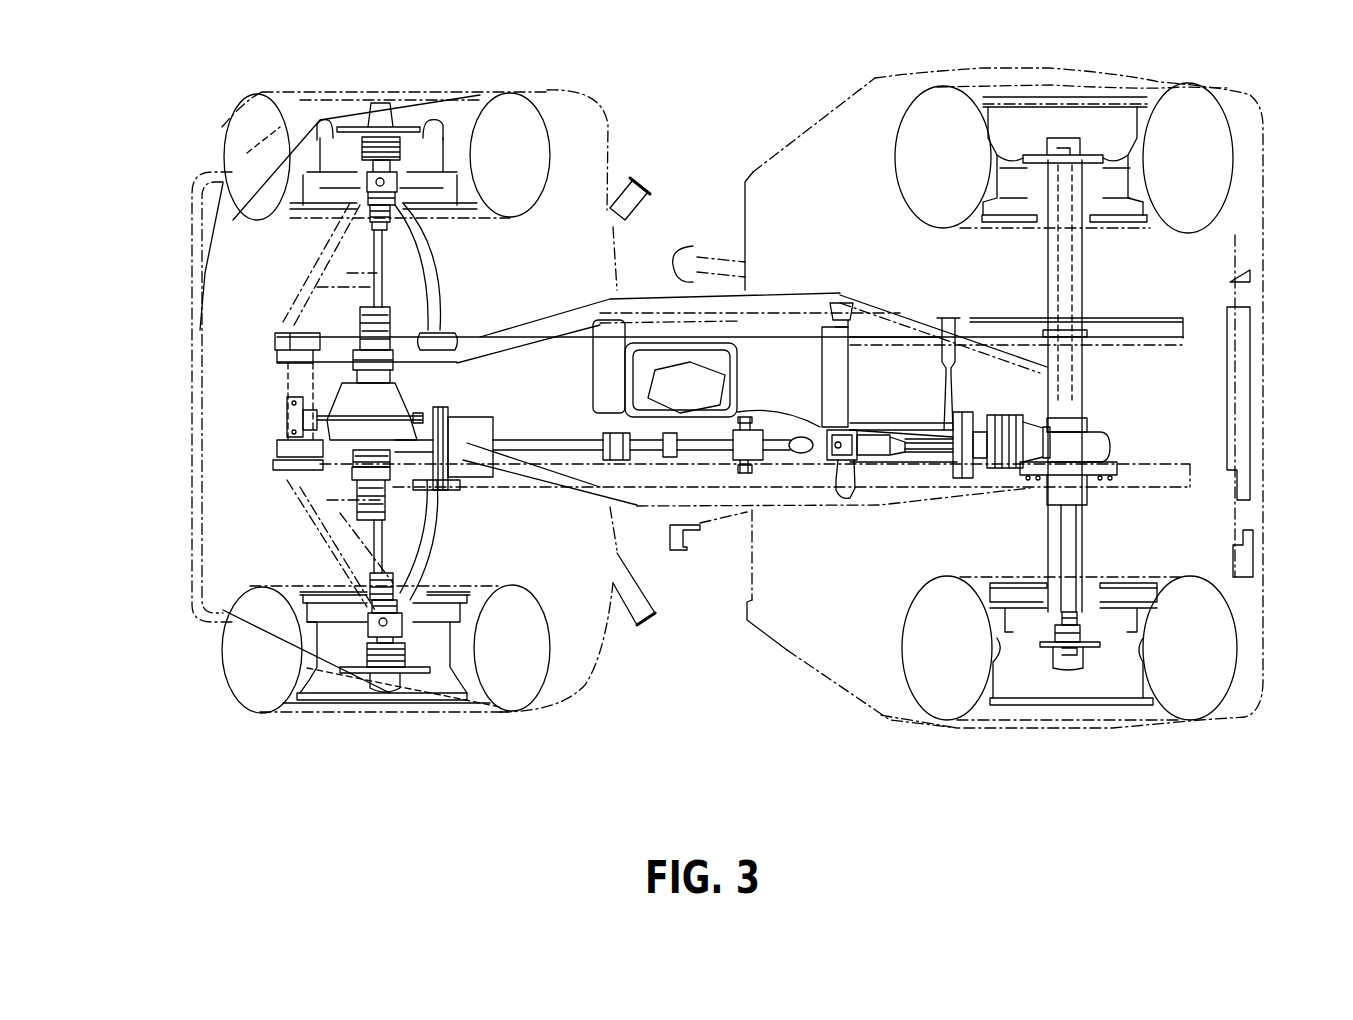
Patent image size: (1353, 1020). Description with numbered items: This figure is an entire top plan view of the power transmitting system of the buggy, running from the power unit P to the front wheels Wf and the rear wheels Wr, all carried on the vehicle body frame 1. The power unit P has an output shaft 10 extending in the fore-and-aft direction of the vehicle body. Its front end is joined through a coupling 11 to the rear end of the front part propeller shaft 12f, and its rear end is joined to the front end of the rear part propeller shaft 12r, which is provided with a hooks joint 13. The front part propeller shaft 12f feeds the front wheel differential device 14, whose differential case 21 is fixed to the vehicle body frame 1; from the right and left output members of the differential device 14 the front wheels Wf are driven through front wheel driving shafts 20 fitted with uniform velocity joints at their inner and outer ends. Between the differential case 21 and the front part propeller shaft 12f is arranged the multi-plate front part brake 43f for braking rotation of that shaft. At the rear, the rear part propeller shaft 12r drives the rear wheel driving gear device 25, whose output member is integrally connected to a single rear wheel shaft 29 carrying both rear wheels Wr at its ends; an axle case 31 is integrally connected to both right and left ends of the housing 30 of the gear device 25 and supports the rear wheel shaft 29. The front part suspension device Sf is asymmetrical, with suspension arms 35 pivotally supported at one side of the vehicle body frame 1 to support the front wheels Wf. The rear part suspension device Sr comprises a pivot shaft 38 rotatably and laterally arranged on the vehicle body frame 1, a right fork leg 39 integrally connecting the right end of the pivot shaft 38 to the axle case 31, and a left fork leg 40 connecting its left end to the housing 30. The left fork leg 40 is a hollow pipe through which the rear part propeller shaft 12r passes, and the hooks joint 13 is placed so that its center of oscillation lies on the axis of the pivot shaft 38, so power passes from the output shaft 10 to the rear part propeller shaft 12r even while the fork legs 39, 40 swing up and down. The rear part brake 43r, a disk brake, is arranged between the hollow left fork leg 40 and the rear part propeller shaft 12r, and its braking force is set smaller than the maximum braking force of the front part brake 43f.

The vehicle body frame 1 is at (1132, 318).
The output shaft 10 is at (723, 450).
The coupling 11 is at (612, 462).
The front part propeller shaft 12f is at (530, 457).
The rear part propeller shaft 12r is at (943, 485).
The hooks joint 13 is at (839, 465).
The front wheel differential device 14 is at (406, 403).
The front wheel driving shafts 20 is at (376, 232).
The differential case 21 is at (338, 410).
The rear wheel driving gear device 25 is at (1088, 441).
The rear wheel shaft 29 is at (1078, 565).
The housing 30 is at (1112, 446).
The axle case 31 is at (1052, 565).
The suspension arms 35 is at (428, 254).
The pivot shaft 38 is at (843, 377).
The right fork leg 39 is at (947, 318).
The left fork leg 40 is at (927, 468).
The front part brake 43f is at (497, 422).
The rear part brake 43r is at (973, 415).
The power unit P is at (757, 373).
The front part suspension device Sf is at (449, 304).
The rear part suspension device Sr is at (879, 327).
The front wheel Wf is at (222, 122).
The rear wheel Wr is at (1235, 173).